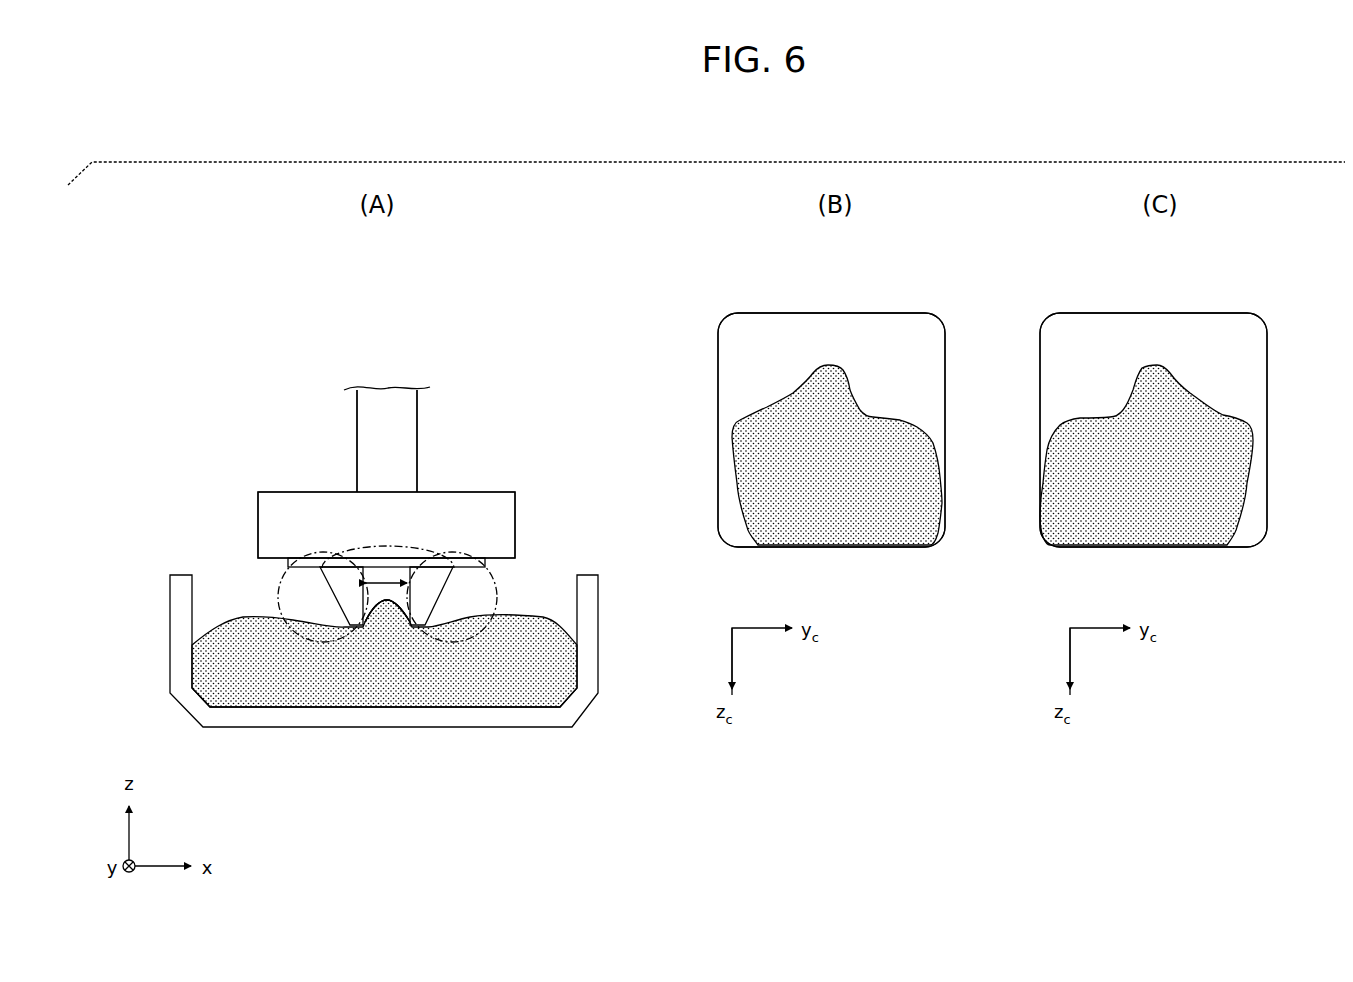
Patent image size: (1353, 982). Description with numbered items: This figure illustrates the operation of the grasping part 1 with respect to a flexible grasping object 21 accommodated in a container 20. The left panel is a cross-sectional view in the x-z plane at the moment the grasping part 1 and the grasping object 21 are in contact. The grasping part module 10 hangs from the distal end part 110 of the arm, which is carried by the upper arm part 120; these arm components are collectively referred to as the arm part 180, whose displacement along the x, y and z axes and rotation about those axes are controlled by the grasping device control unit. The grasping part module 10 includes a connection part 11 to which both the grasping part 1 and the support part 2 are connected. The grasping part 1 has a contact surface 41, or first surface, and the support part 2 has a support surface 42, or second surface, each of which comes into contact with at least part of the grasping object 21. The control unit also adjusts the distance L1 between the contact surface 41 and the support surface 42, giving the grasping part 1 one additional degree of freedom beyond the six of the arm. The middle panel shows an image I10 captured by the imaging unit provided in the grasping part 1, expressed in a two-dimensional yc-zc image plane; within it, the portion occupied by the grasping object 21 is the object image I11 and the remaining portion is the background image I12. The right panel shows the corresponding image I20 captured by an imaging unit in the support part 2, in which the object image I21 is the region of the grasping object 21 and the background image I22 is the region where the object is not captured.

The grasping part 1 is at (328, 589).
The support part 2 is at (440, 592).
The grasping part module 10 is at (437, 553).
The connection part 11 is at (487, 563).
The container 20 is at (600, 607).
The grasping object 21 is at (387, 606).
The contact surface 41 is at (383, 610).
The support surface 42 is at (388, 605).
The distal end part 110 is at (488, 491).
The upper arm part 120 is at (418, 445).
The arm part 180 is at (386, 474).
The distance L1 is at (388, 582).
The image I10 is at (887, 310).
The object image I11 is at (900, 467).
The background image I12 is at (902, 358).
The image I20 is at (1222, 310).
The object image I21 is at (1237, 467).
The background image I22 is at (1240, 358).